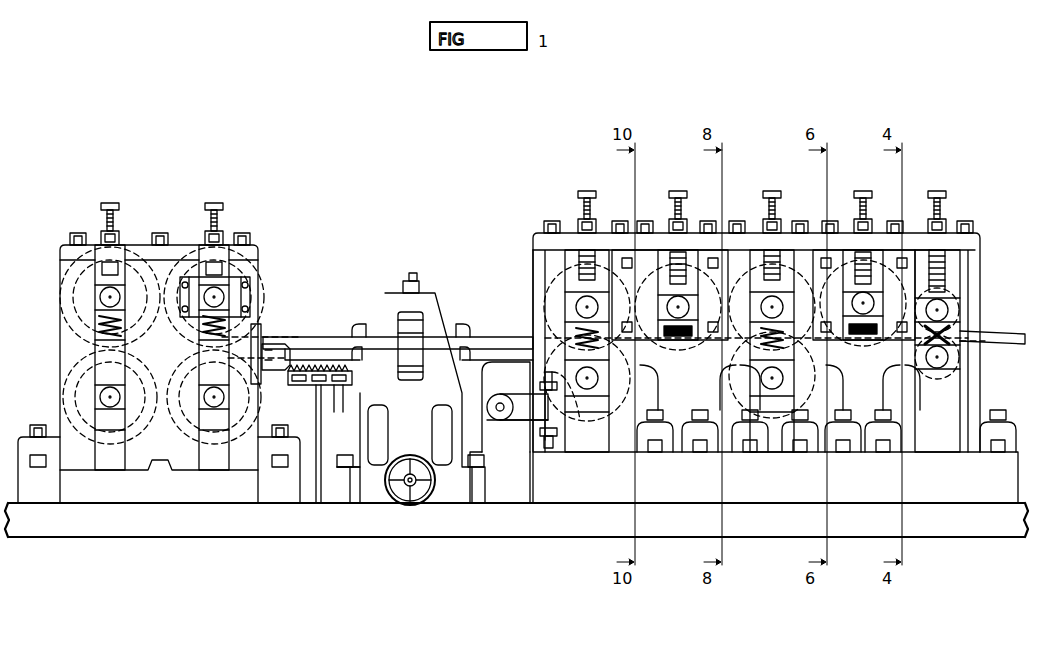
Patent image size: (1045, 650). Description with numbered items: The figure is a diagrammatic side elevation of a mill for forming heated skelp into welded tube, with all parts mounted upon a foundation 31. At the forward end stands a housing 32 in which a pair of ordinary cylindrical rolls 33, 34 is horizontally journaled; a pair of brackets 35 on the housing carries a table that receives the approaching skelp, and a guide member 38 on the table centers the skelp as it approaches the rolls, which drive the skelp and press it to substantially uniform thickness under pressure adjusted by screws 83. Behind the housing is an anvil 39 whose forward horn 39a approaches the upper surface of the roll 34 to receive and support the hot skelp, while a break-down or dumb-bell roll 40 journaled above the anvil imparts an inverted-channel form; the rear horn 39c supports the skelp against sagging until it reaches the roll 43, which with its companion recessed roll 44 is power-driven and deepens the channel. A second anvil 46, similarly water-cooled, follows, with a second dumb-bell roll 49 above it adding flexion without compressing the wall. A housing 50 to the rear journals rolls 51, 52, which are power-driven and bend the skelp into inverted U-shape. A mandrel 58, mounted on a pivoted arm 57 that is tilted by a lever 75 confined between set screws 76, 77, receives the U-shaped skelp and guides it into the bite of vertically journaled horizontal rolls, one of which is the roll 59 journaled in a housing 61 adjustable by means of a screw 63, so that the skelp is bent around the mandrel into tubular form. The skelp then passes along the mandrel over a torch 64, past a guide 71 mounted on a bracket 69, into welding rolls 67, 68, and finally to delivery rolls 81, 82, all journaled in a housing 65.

The foundation 31 is at (240, 512).
The housing 32 is at (975, 268).
The roll 33 is at (955, 300).
The roll 34 is at (952, 366).
The brackets 35 is at (985, 345).
The guide member 38 is at (992, 335).
The anvil 39 is at (863, 381).
The forward horn of the anvil 39a is at (912, 372).
The rear horn of the anvil 39c is at (779, 393).
The dumb-bell roll 40 is at (880, 272).
The roll 43 is at (766, 400).
The roll 44 is at (770, 282).
The second anvil 46 is at (688, 387).
The second dumb-bell roll 49 is at (668, 272).
The housing 50 is at (540, 262).
The roll 51 is at (598, 408).
The roll 52 is at (572, 282).
The arm 57 is at (496, 360).
The mandrel 58 is at (322, 340).
The roll 59 is at (370, 320).
The housing 61 is at (411, 388).
The screw 63 is at (412, 505).
The torch 64 is at (330, 390).
The housing 65 is at (62, 348).
The welding roll 67 is at (250, 290).
The welding roll 68 is at (220, 442).
The bracket 69 is at (262, 335).
The guide 71 is at (270, 372).
The lever 75 is at (550, 430).
The set screw 76 is at (556, 398).
The set screw 77 is at (510, 425).
The delivery roll 81 is at (60, 297).
The delivery roll 82 is at (60, 397).
The screws 83 is at (101, 222).